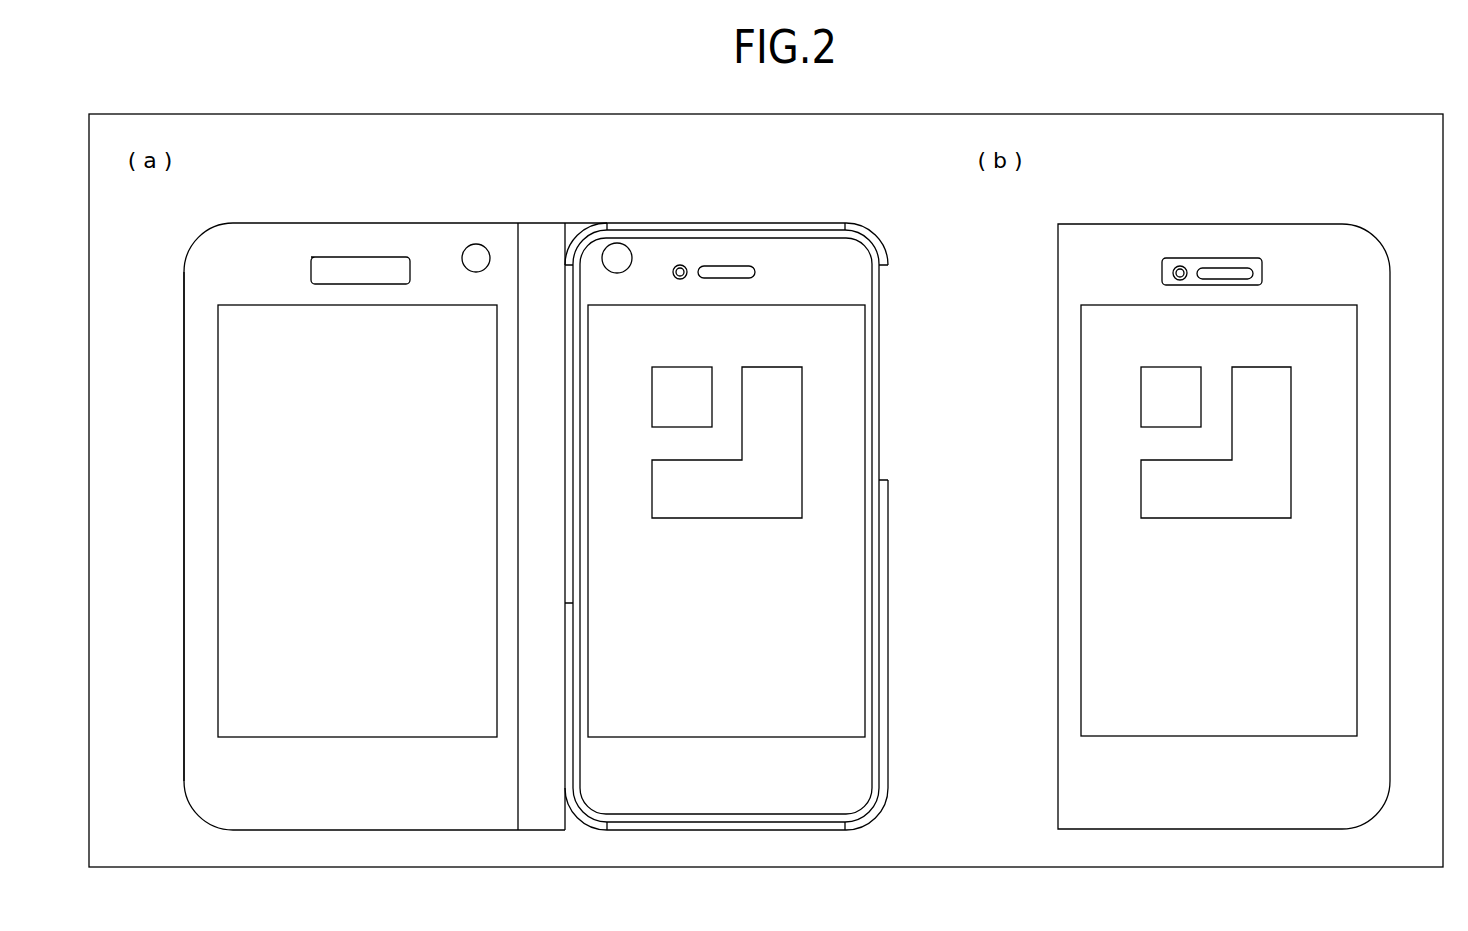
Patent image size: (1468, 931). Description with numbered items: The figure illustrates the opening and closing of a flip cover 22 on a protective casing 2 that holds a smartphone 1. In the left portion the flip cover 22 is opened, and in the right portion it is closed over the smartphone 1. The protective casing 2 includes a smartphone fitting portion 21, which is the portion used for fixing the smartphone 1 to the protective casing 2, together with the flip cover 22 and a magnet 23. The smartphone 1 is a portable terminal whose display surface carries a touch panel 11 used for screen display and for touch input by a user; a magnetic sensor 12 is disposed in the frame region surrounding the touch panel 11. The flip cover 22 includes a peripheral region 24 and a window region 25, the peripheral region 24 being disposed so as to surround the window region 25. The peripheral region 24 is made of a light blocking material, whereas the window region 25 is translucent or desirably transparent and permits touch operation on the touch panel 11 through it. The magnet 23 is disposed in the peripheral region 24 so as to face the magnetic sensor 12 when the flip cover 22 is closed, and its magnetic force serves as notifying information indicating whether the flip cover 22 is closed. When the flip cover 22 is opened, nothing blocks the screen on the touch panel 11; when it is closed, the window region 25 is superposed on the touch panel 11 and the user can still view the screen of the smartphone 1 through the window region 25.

The smartphone 1 is at (806, 230).
The protective casing 2 is at (350, 212).
The touch panel 11 is at (838, 362).
The magnetic sensor 12 is at (623, 245).
The smartphone fitting portion 21 is at (884, 232).
The flip cover 22 is at (437, 222).
The magnet 23 is at (481, 244).
The peripheral region 24 is at (200, 307).
The window region 25 is at (245, 380).